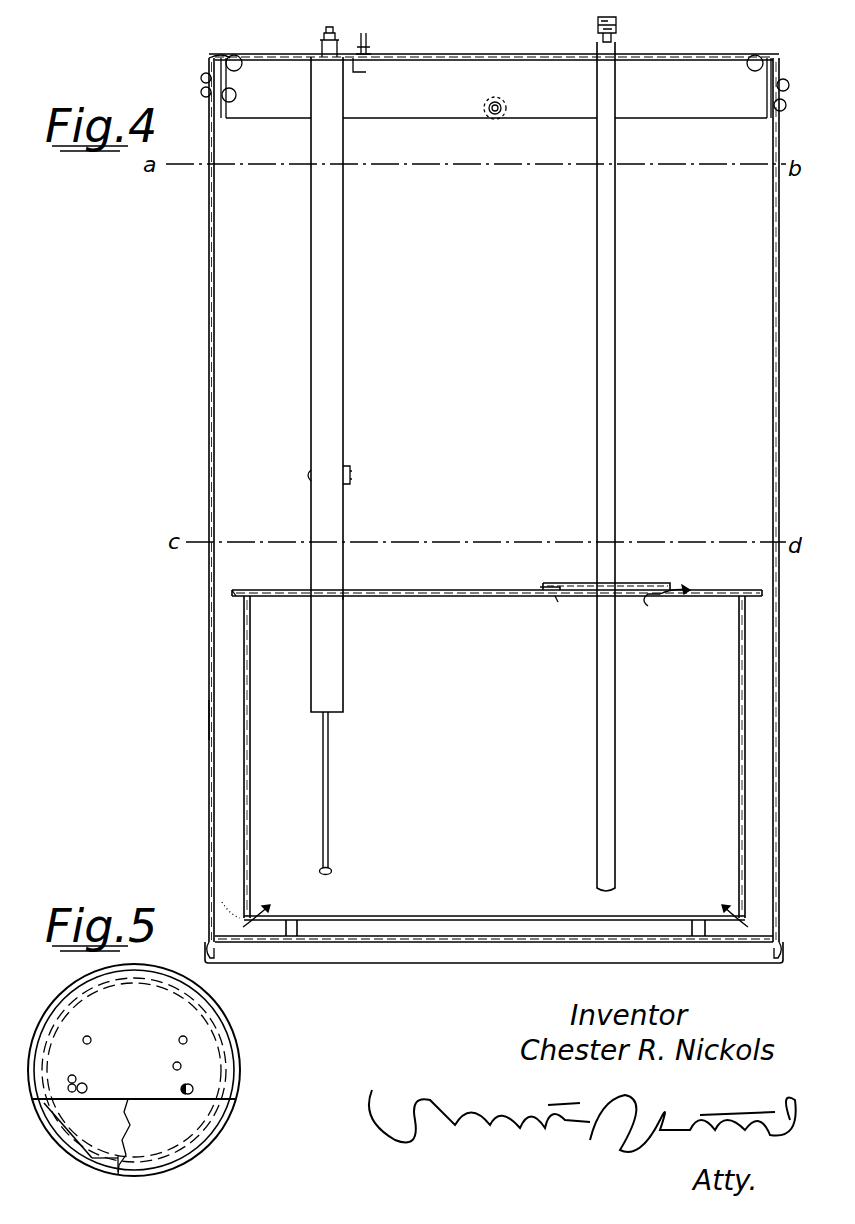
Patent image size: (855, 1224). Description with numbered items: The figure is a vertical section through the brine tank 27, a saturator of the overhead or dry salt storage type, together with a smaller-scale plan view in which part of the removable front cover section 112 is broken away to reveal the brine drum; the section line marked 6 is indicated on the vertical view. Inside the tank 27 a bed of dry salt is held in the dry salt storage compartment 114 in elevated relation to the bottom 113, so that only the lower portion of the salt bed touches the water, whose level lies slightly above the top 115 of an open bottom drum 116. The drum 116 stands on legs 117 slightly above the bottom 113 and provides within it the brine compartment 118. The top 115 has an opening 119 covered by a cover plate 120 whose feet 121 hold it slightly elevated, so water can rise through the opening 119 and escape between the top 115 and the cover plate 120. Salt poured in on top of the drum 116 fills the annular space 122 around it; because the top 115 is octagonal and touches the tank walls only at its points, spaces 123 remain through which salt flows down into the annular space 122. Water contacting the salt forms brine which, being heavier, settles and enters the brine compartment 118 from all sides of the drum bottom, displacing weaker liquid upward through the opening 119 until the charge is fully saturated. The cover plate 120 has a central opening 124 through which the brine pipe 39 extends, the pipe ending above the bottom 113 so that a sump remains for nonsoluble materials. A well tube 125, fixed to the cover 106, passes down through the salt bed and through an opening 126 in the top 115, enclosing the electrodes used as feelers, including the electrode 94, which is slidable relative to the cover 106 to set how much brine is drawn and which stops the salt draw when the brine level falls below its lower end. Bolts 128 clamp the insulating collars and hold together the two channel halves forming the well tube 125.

In FIG. 4, the section line 6- 6 is at (334, 25).
In FIG. 4, the brine tank 27 is at (209, 305).
In FIG. 5, the brine tank 27 is at (72, 1152).
In FIG. 4, the brine pipe 39 is at (615, 405).
In FIG. 4, the electrode 94 is at (328, 830).
In FIG. 4, the cover 106 is at (445, 52).
In FIG. 5, the cover 106 is at (208, 1063).
In FIG. 5, the removable front cover section 112 is at (208, 1127).
In FIG. 4, the bottom 113 is at (410, 936).
In FIG. 4, the dry salt storage compartment 114 is at (497, 346).
In FIG. 4, the top 115 is at (437, 596).
In FIG. 5, the top 115 is at (107, 1112).
In FIG. 4, the open bottom drum 116 is at (250, 789).
In FIG. 5, the open bottom drum 116 is at (62, 1149).
In FIG. 4, the legs 117 is at (299, 918).
In FIG. 4, the brine compartment 118 is at (491, 767).
In FIG. 4, the opening 119 is at (566, 598).
In FIG. 4, the cover plate 120 is at (588, 588).
In FIG. 4, the feet 121 is at (545, 587).
In FIG. 4, the annular space 122 is at (222, 720).
In FIG. 4, the spaces 123 is at (224, 590).
In FIG. 5, the spaces 123 is at (112, 1160).
In FIG. 4, the central opening 124 is at (618, 590).
In FIG. 4, the well tube 125 is at (335, 368).
In FIG. 4, the opening 126 is at (344, 597).
In FIG. 4, the bolts 128 is at (352, 475).